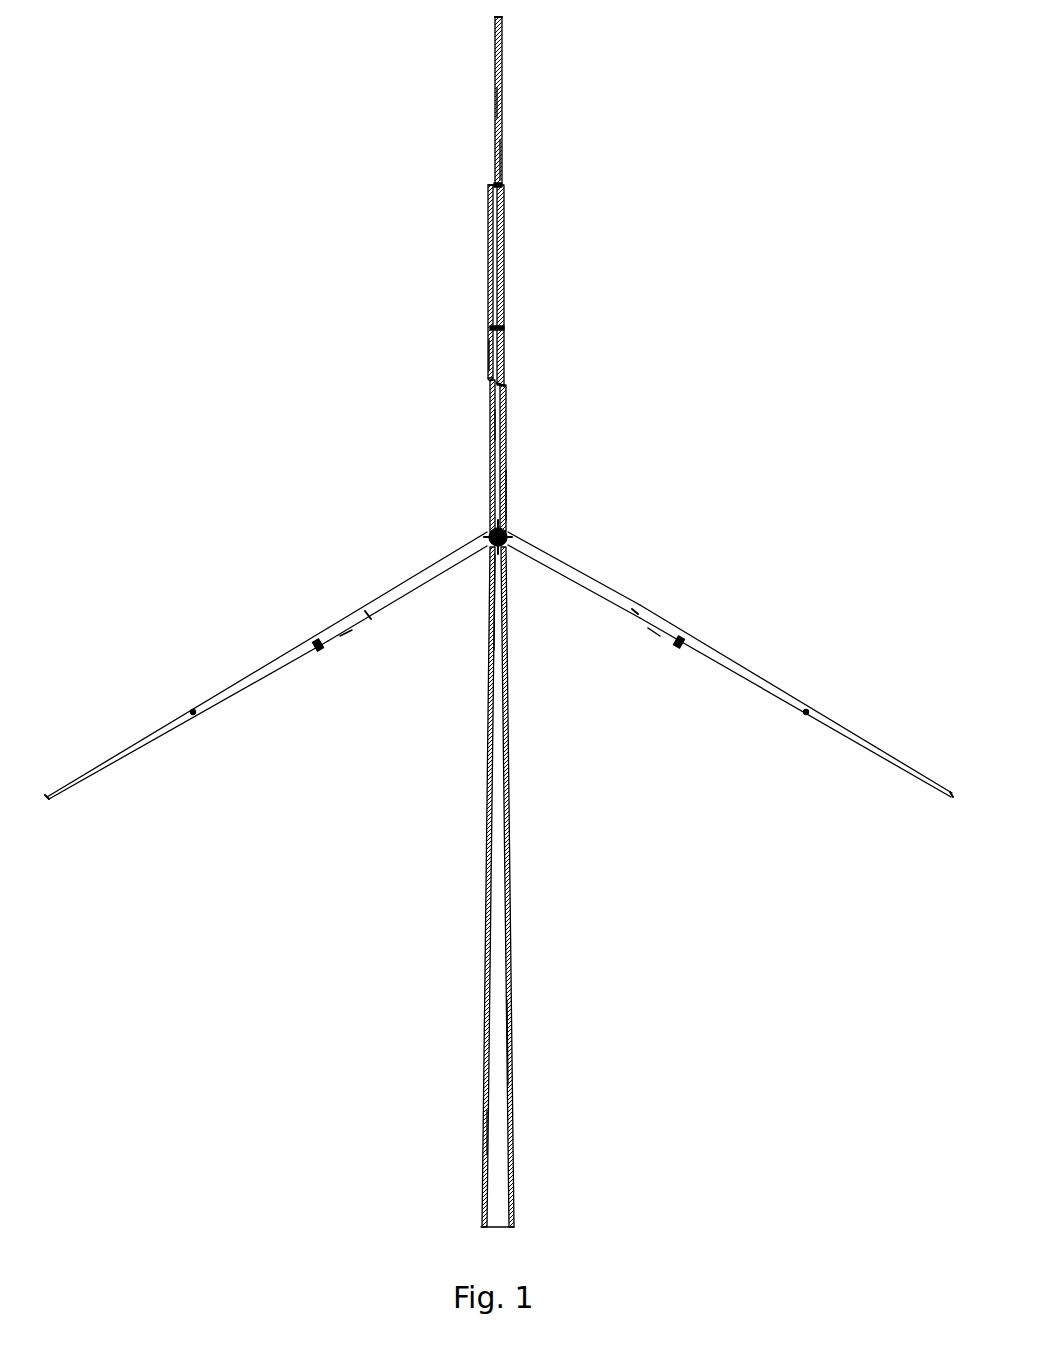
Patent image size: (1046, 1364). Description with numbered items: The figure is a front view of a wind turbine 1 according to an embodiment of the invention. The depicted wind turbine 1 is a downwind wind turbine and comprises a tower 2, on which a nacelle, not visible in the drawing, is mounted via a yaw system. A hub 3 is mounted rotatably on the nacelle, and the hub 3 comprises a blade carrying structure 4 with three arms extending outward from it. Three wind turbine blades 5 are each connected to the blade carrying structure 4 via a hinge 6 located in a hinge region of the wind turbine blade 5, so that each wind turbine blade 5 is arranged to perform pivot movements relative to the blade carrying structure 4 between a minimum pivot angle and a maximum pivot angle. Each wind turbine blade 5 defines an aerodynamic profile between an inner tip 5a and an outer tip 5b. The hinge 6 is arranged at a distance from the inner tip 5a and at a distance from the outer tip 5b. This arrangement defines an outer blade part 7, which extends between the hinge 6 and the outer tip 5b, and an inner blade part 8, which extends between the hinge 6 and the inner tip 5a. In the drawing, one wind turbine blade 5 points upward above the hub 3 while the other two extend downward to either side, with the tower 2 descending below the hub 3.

The wind turbine 1 is at (303, 148).
The tower 2 is at (500, 1083).
The hub 3 is at (510, 535).
The blade carrying structure 4 is at (490, 447).
The wind turbine blade 5 is at (483, 258).
The inner tip 5a is at (500, 386).
The outer tip 5b is at (498, 17).
The hinge 6 is at (503, 328).
The outer blade part 7 is at (498, 155).
The inner blade part 8 is at (487, 350).